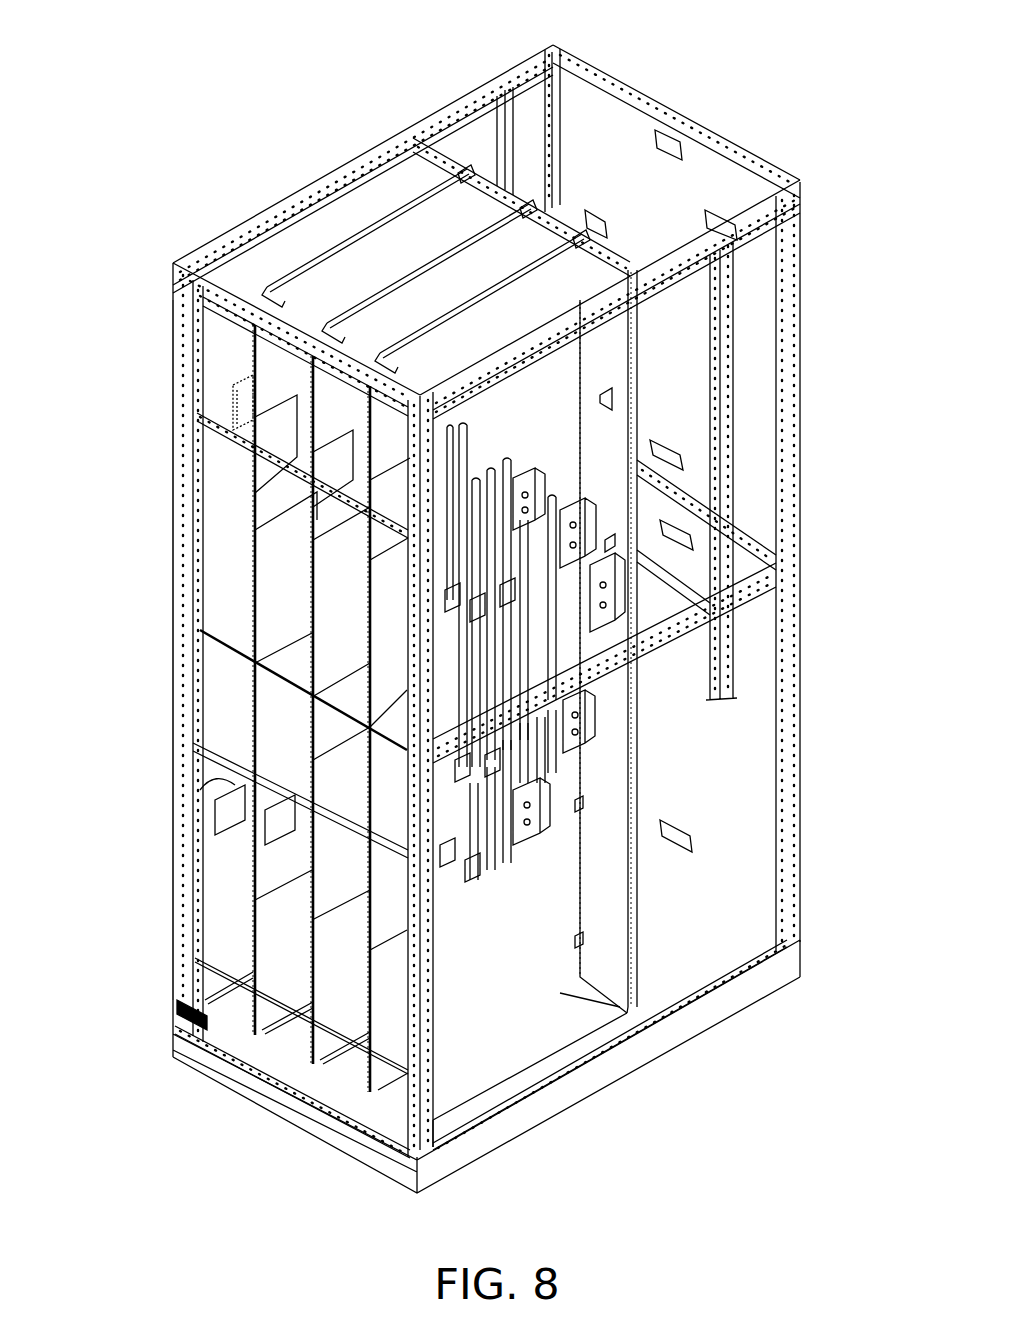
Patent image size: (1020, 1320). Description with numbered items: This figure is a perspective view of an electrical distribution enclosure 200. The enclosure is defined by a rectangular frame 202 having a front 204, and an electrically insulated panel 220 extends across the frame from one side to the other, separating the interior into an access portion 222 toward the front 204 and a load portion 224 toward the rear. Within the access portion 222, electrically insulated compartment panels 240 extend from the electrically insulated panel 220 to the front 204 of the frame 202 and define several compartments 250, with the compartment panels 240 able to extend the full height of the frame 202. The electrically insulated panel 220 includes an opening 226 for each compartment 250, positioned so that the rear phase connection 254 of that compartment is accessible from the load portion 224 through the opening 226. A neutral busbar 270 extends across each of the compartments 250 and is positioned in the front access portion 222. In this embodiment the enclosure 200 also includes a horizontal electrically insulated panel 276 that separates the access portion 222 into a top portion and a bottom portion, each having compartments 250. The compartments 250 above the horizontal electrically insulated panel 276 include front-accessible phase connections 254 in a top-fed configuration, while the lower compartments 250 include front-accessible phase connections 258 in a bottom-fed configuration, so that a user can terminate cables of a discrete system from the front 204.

The electrical distribution enclosure 200 is at (303, 158).
The rectangular frame 202 is at (485, 78).
The front 204 is at (152, 407).
The electrically insulated panel 220 is at (520, 462).
The access portion 222 is at (515, 414).
The load portion 224 is at (649, 354).
The opening 226 is at (690, 518).
The electrically insulated compartment panel 240 is at (423, 323).
The compartment 250 is at (320, 224).
The rear phase connection 254 is at (572, 505).
The front-accessible phase connection 258 is at (655, 440).
The neutral busbar 270 is at (430, 536).
The horizontal electrically insulated panel 276 is at (200, 752).